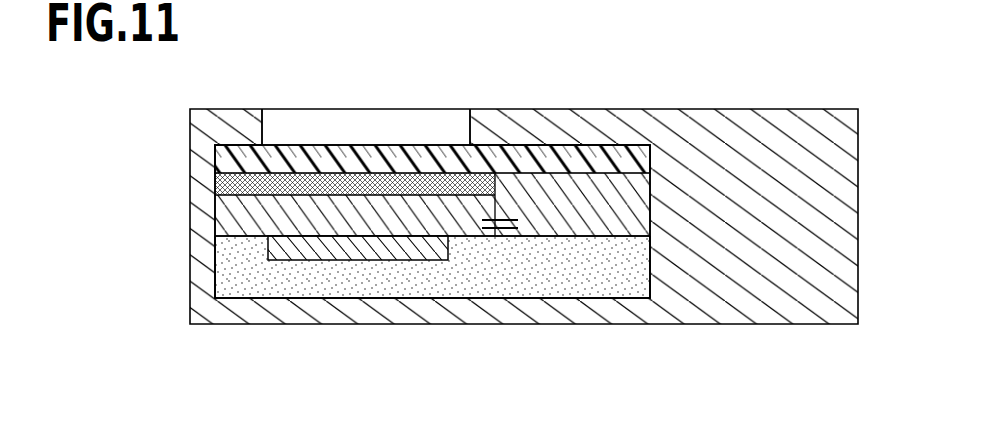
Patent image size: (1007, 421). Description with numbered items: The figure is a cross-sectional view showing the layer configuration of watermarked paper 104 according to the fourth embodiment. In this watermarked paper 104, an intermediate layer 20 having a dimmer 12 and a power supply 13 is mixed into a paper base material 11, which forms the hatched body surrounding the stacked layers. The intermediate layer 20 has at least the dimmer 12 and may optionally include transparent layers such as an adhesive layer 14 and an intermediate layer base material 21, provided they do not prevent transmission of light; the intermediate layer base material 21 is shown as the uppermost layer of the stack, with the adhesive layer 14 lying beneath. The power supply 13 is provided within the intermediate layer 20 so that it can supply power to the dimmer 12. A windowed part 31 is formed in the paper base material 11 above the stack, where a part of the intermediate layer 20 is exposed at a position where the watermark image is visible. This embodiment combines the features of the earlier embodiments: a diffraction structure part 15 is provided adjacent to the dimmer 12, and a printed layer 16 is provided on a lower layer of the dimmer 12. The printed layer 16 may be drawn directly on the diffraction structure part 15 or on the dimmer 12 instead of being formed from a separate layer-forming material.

The watermarked paper 104 is at (813, 95).
The paper base material 11 is at (731, 125).
The intermediate layer 20 is at (635, 142).
The intermediate layer base material 21 is at (550, 145).
The windowed part 31 is at (470, 105).
The power supply 13 is at (585, 238).
The adhesive layer 14 is at (490, 268).
The dimmer 12 is at (326, 262).
The diffraction structure part 15 is at (262, 240).
The printed layer 16 is at (408, 262).